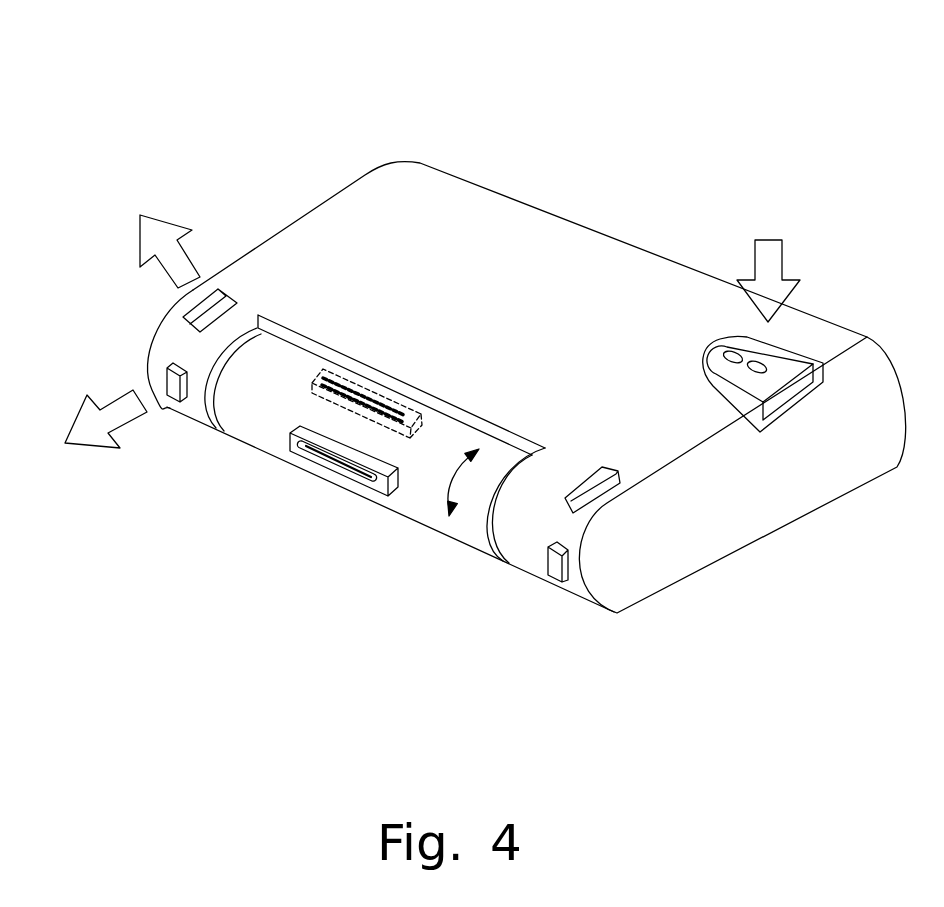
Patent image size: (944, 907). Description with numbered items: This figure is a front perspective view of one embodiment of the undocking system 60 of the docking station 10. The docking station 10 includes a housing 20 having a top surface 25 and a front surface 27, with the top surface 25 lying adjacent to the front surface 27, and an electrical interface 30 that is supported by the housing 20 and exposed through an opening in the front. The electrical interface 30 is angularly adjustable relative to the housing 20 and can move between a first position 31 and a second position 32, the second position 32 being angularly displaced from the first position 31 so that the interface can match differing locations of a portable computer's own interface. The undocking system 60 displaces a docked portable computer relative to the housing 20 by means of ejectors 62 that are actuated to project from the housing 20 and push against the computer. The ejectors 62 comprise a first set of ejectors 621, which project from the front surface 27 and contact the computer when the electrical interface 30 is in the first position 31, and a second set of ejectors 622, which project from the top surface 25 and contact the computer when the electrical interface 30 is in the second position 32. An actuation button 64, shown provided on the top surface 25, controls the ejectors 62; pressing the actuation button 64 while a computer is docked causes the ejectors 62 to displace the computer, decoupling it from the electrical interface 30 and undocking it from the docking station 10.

The docking station 10 is at (757, 90).
The housing 20 is at (699, 266).
The top surface 25 is at (527, 223).
The front surface 27 is at (582, 591).
The electrical interface 30 is at (298, 482).
The first position 31 is at (363, 477).
The second position 32 is at (375, 397).
The undocking system 60 is at (190, 654).
The ejectors 62 is at (126, 364).
The first set of ejectors 621 is at (173, 383).
The second set of ejectors 622 is at (215, 298).
The actuation button 64 is at (778, 373).